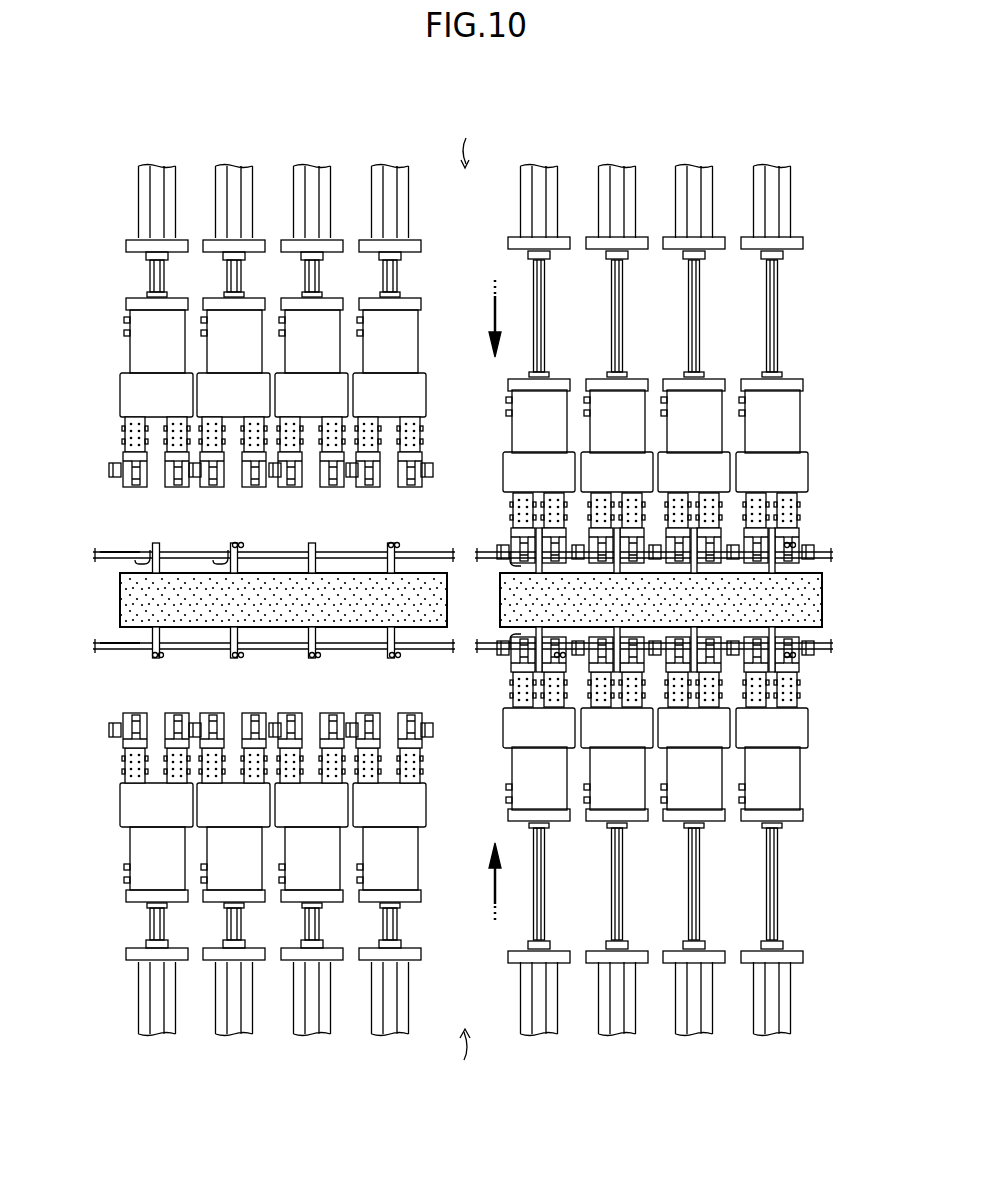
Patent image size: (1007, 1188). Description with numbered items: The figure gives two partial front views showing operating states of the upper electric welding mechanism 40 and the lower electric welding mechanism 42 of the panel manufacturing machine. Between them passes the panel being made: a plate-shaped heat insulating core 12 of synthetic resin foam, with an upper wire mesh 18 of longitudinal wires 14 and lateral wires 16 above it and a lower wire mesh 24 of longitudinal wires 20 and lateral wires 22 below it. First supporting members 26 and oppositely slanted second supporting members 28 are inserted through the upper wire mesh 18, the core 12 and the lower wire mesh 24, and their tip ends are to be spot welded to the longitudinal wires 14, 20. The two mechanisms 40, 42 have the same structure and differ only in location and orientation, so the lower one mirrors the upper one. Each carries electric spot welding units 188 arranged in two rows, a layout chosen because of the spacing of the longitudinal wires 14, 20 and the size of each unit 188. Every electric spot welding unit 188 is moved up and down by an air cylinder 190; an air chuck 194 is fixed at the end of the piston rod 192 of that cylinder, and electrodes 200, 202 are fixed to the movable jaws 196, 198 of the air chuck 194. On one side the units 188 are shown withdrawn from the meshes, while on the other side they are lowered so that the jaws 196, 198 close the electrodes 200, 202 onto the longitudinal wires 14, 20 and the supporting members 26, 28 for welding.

The heat insulating core 12 is at (824, 594).
The longitudinal wires 14 is at (776, 545).
The lateral wires 16 is at (120, 539).
The upper wire mesh 18 is at (832, 557).
The longitudinal wires 20 is at (790, 652).
The lateral wires 22 is at (118, 651).
The lower wire mesh 24 is at (828, 640).
The first supporting members 26 is at (522, 646).
The second supporting members 28 is at (795, 663).
The upper electric welding mechanism 40 is at (479, 134).
The lower electric welding mechanism 42 is at (479, 1090).
The electric spot welding unit 188 is at (459, 595).
The air cylinder 190 is at (788, 996).
The piston rod 192 is at (777, 875).
The air chuck 194 is at (800, 750).
The movable jaw 196 is at (109, 602).
The movable jaw 198 is at (201, 602).
The electrode 200 is at (140, 714).
The electrode 202 is at (182, 587).